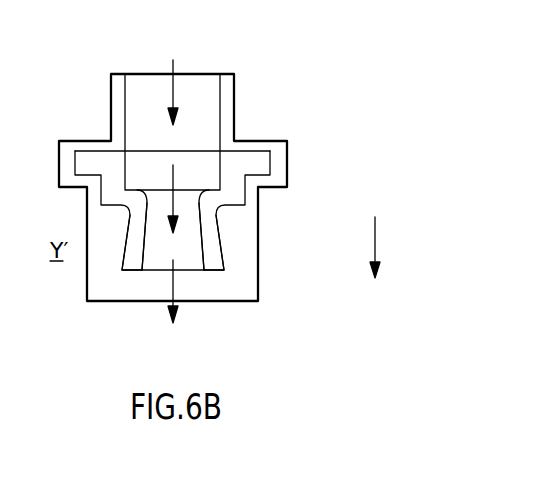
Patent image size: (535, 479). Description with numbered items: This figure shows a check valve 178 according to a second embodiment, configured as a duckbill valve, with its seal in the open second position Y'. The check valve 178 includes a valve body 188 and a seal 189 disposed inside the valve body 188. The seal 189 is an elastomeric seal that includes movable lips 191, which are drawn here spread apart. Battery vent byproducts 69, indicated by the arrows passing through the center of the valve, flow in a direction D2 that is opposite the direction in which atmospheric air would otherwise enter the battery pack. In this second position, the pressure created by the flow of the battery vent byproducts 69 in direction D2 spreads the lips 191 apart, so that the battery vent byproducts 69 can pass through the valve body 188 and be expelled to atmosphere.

The check valve 178 is at (332, 115).
The seal 189 is at (232, 183).
The valve body 188 is at (258, 256).
The lips 191 is at (213, 261).
The battery vent byproducts 69 is at (173, 183).
The direction D2 is at (376, 240).